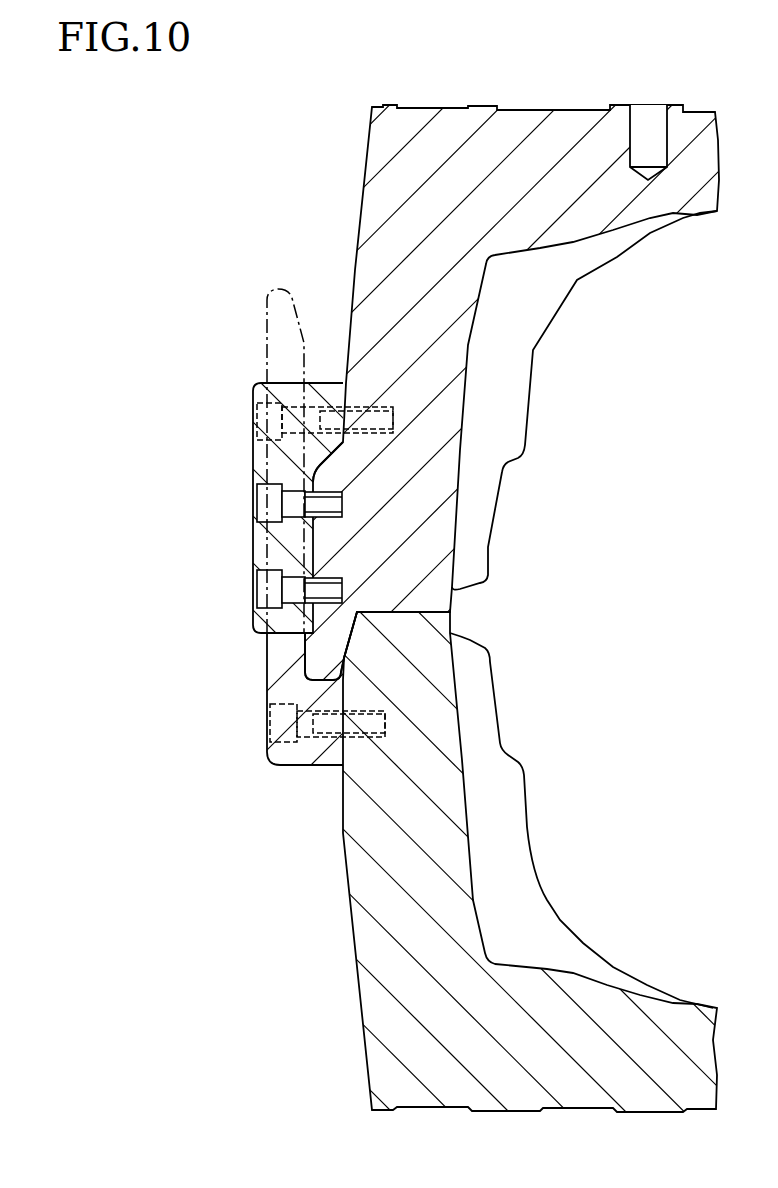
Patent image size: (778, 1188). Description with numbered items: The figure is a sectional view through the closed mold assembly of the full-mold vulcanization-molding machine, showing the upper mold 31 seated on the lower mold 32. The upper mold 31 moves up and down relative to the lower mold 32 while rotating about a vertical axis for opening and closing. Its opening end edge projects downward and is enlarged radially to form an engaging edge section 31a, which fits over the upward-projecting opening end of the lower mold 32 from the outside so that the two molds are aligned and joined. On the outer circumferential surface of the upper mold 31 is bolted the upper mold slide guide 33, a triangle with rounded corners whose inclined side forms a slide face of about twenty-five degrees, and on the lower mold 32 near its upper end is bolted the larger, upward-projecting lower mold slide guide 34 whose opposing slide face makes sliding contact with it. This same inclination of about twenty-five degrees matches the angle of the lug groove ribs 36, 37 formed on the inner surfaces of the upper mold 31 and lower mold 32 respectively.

The upper mold 31 is at (459, 108).
The engaging edge section 31a is at (320, 643).
The lower mold 32 is at (443, 1112).
The upper mold slide guide 33 is at (252, 453).
The lower mold slide guide 34 is at (267, 302).
The lug groove rib 36 is at (527, 392).
The lug groove rib 37 is at (527, 832).